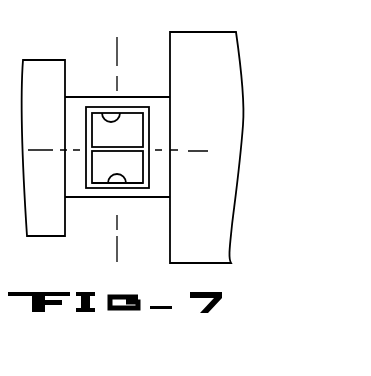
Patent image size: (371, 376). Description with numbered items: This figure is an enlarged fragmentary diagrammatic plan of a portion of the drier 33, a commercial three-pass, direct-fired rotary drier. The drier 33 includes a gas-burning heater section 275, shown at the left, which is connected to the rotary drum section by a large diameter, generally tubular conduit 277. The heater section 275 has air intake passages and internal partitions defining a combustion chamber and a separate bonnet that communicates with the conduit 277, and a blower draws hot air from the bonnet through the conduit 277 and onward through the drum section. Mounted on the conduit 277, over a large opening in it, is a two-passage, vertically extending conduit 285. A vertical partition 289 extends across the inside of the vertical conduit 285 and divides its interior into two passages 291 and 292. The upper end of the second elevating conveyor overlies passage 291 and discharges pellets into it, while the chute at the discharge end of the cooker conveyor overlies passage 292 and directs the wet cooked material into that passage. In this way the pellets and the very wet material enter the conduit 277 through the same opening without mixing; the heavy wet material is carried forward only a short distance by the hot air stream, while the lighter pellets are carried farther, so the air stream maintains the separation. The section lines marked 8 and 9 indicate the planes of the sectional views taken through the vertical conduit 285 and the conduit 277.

The gas-burning heater section 275 is at (40, 72).
The drier 33 is at (240, 90).
The tubular conduit 277 is at (143, 98).
The vertical partition 289 is at (120, 148).
The passage 292 is at (103, 117).
The passage 291 is at (113, 180).
The two-passage vertically extending conduit 285 is at (140, 186).
The section line 8- 8 is at (110, 252).
The section line 9- 9 is at (198, 159).